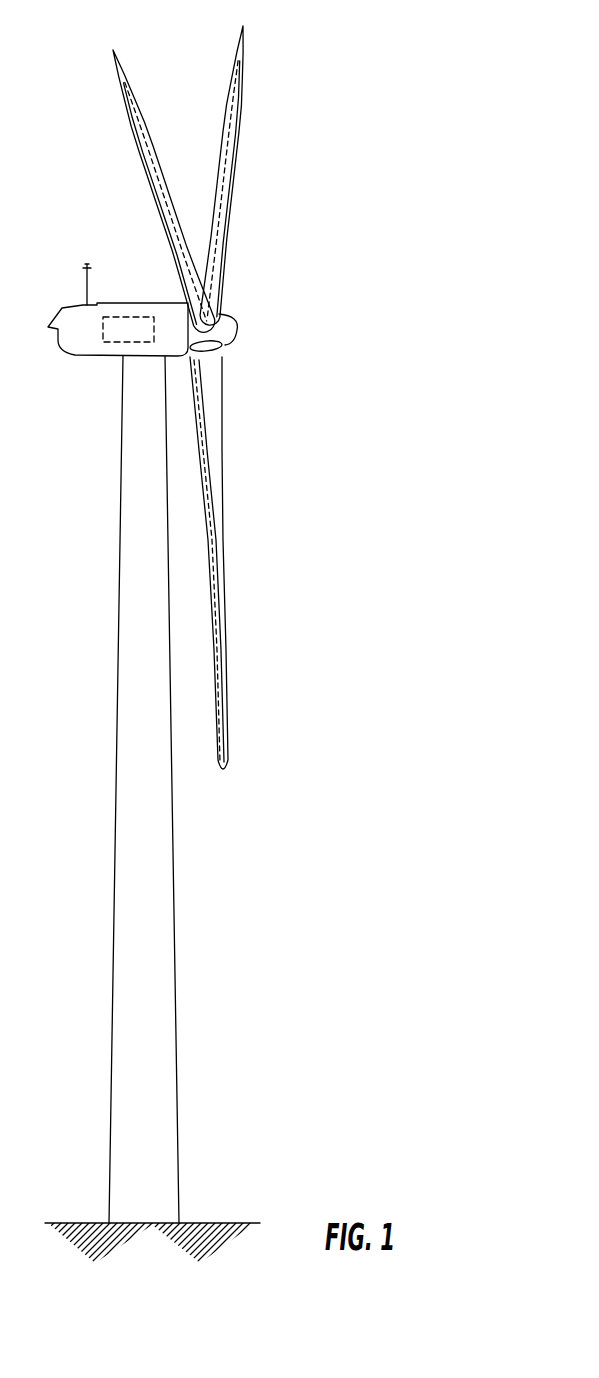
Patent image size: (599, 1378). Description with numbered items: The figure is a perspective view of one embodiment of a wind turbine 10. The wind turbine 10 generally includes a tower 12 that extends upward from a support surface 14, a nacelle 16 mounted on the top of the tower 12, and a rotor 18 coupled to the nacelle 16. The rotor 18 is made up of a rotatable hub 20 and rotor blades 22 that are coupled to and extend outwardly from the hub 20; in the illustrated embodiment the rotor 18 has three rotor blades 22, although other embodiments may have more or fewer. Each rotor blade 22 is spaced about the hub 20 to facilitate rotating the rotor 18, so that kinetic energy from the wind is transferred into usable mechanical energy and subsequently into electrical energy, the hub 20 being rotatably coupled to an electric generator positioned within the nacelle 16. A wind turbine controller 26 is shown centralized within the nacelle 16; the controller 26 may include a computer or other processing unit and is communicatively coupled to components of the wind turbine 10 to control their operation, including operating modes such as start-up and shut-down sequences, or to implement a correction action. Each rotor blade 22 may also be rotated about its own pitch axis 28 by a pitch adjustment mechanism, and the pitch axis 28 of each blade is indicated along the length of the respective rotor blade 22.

The wind turbine 10 is at (429, 139).
The tower 12 is at (157, 862).
The support surface 14 is at (88, 1222).
The nacelle 16 is at (93, 358).
The rotor 18 is at (292, 254).
The rotatable hub 20 is at (238, 326).
The rotor blade 22 is at (152, 145).
The wind turbine controller 26 is at (137, 317).
The pitch axis 28 is at (155, 196).